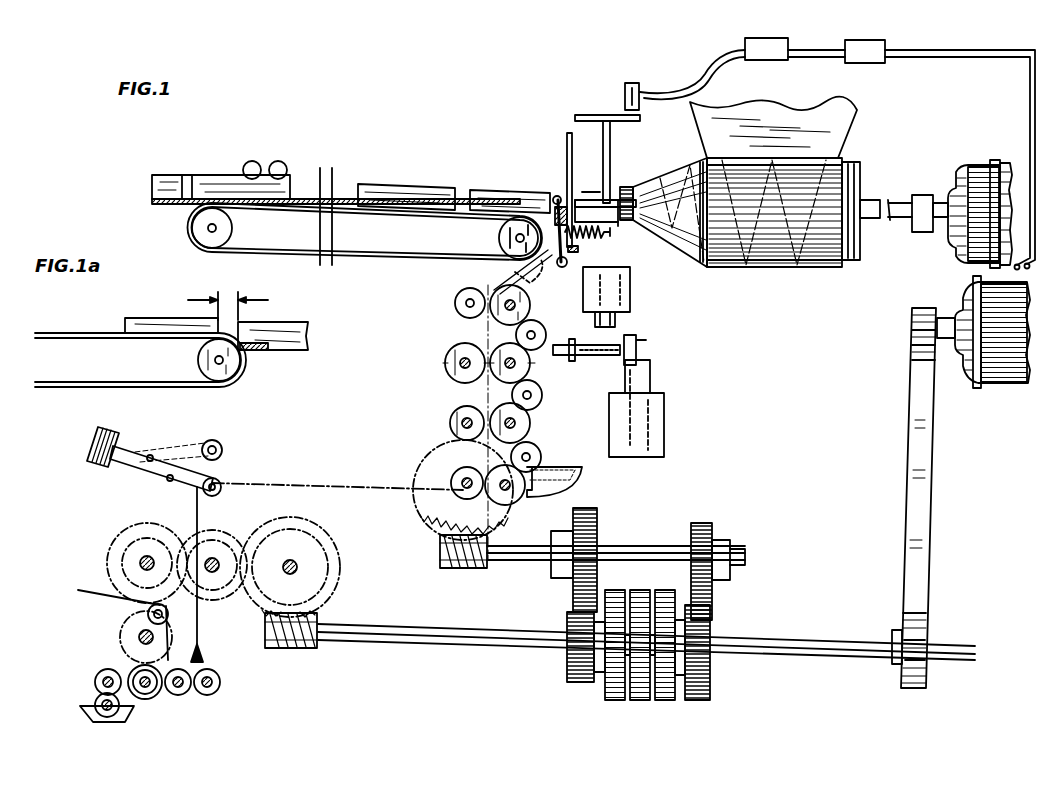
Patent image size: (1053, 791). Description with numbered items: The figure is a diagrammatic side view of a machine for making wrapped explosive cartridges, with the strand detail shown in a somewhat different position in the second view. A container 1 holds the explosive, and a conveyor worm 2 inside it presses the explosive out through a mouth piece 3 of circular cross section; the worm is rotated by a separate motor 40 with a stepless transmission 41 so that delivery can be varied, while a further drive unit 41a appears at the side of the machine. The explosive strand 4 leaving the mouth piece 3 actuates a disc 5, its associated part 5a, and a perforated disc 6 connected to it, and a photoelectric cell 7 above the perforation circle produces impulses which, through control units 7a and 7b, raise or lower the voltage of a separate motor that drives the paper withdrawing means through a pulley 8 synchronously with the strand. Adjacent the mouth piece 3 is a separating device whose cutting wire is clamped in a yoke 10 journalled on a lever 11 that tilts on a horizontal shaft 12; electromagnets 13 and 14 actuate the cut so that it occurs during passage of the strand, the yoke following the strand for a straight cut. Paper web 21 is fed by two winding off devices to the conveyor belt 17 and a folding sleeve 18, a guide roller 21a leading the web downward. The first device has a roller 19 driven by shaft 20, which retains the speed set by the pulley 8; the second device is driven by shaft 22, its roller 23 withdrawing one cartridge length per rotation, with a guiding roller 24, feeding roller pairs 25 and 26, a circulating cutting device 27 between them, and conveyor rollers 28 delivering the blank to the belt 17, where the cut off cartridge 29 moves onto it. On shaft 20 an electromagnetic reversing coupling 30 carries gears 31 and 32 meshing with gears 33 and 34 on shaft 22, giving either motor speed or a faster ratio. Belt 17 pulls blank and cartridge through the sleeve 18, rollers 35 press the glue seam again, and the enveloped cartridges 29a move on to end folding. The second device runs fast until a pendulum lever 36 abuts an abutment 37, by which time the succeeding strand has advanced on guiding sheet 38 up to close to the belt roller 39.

In FIG. 1, the container 1 is at (822, 255).
In FIG. 1, the conveyor worm 2 is at (852, 168).
In FIG. 1, the mouth piece 3 is at (628, 190).
In FIG. 1, the explosive strand 4 is at (582, 205).
In FIG. 1, the disc 5 is at (616, 195).
In FIG. 1, the holder part 5a is at (612, 136).
In FIG. 1, the perforated disc 6 is at (598, 114).
In FIG. 1, the photoelectric cell 7 is at (624, 88).
In FIG. 1, the control unit 7a is at (748, 40).
In FIG. 1, the control unit 7b is at (850, 42).
In FIG. 1, the pulley 8 is at (908, 628).
In FIG. 1, the yoke 10 is at (566, 140).
In FIG. 1, the lever 11 is at (558, 198).
In FIG. 1, the horizontal shaft 12 is at (570, 262).
In FIG. 1, the electromagnet 13 is at (622, 290).
In FIG. 1, the electromagnet 14 is at (655, 420).
In FIG. 1, the conveyor belt 17 is at (430, 232).
In FIG. 1a, the conveyor belt 17 is at (172, 388).
In FIG. 1, the folding sleeve 18 is at (345, 185).
In FIG. 1, the roller 19 is at (150, 698).
In FIG. 1, the shaft 20 is at (448, 650).
In FIG. 1, the paper web 21 is at (318, 478).
In FIG. 1, the guide roller 21a is at (458, 296).
In FIG. 1, the shaft 22 is at (668, 548).
In FIG. 1, the roller 23 is at (455, 482).
In FIG. 1, the guiding roller 24 is at (503, 505).
In FIG. 1, the feeding roller pair 25 is at (519, 425).
In FIG. 1, the feeding roller pair 26 is at (531, 310).
In FIG. 1, the circulating cutting device 27 is at (531, 375).
In FIG. 1, the conveyor rollers 28 is at (606, 240).
In FIG. 1, the cartridge 29 is at (500, 190).
In FIG. 1a, the cartridge 29 is at (138, 326).
In FIG. 1, the enveloped cartridge 29a is at (210, 180).
In FIG. 1, the electromagnetic reversing coupling 30 is at (643, 700).
In FIG. 1, the gear 31 is at (580, 684).
In FIG. 1, the gear 32 is at (712, 676).
In FIG. 1, the gear 33 is at (598, 520).
In FIG. 1, the gear 34 is at (712, 530).
In FIG. 1, the rollers 35 is at (278, 160).
In FIG. 1, the pendulum lever 36 is at (188, 470).
In FIG. 1, the abutment 37 is at (170, 482).
In FIG. 1, the guiding sheet 38 is at (556, 205).
In FIG. 1a, the guiding sheet 38 is at (262, 352).
In FIG. 1, the belt roller 39 is at (498, 236).
In FIG. 1a, the belt roller 39 is at (225, 380).
In FIG. 1, the motor 40 is at (972, 168).
In FIG. 1, the stepless transmission 41 is at (922, 195).
In FIG. 1, the motor 41a is at (967, 295).